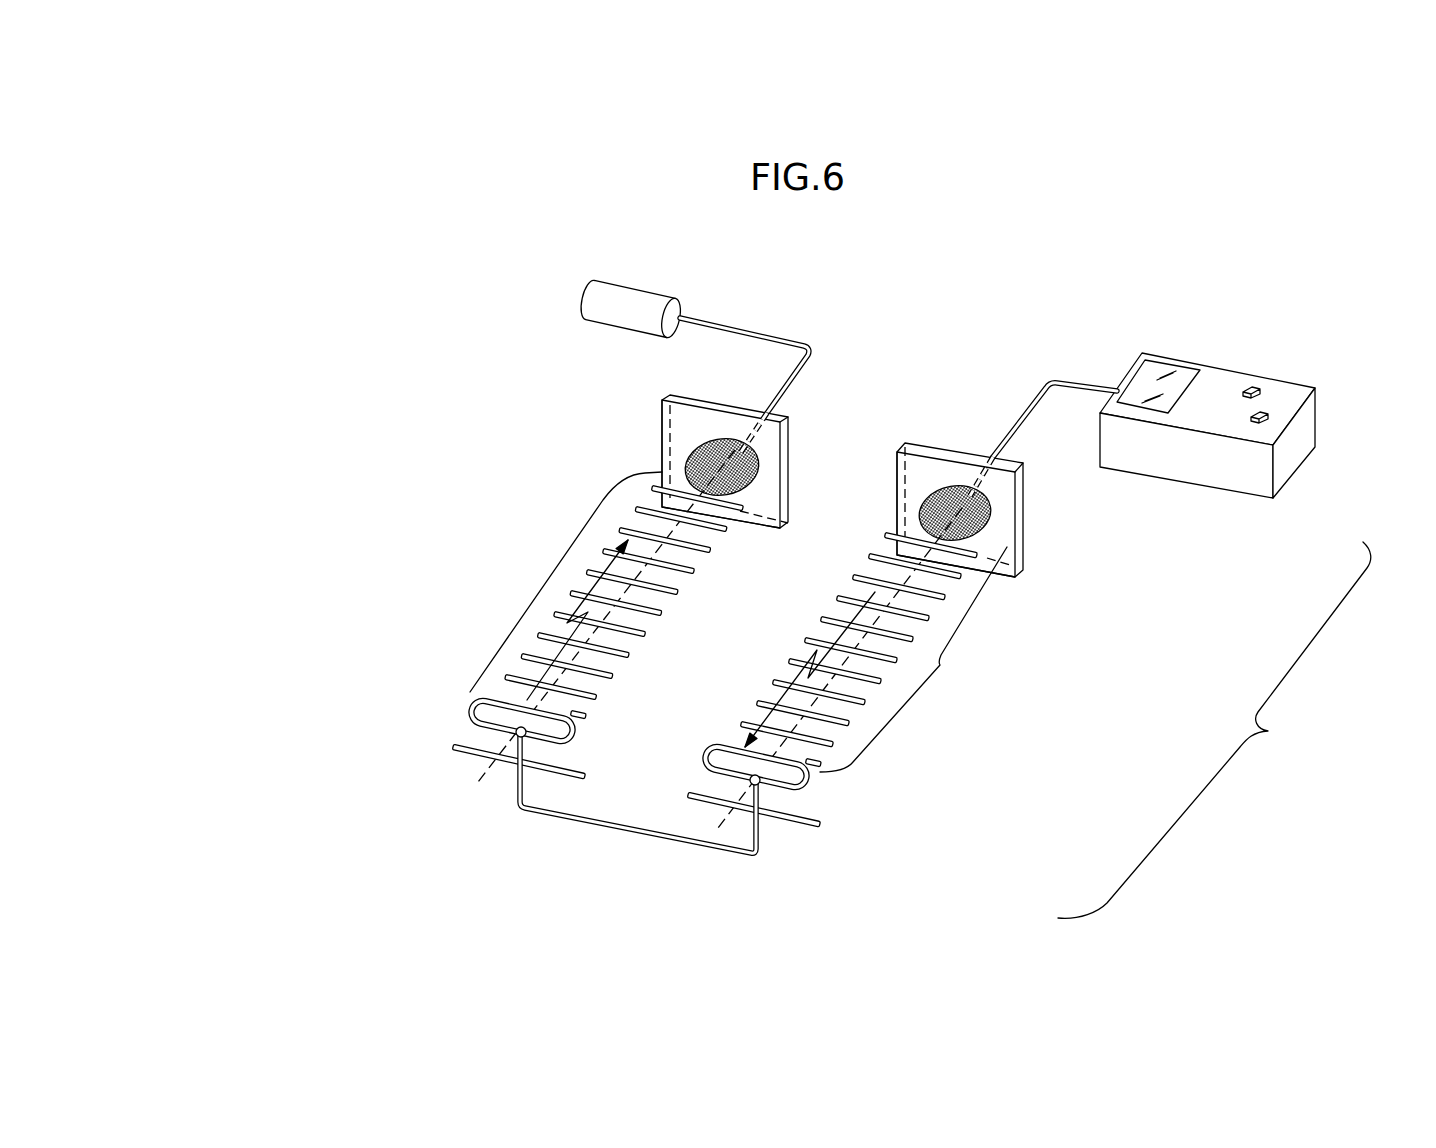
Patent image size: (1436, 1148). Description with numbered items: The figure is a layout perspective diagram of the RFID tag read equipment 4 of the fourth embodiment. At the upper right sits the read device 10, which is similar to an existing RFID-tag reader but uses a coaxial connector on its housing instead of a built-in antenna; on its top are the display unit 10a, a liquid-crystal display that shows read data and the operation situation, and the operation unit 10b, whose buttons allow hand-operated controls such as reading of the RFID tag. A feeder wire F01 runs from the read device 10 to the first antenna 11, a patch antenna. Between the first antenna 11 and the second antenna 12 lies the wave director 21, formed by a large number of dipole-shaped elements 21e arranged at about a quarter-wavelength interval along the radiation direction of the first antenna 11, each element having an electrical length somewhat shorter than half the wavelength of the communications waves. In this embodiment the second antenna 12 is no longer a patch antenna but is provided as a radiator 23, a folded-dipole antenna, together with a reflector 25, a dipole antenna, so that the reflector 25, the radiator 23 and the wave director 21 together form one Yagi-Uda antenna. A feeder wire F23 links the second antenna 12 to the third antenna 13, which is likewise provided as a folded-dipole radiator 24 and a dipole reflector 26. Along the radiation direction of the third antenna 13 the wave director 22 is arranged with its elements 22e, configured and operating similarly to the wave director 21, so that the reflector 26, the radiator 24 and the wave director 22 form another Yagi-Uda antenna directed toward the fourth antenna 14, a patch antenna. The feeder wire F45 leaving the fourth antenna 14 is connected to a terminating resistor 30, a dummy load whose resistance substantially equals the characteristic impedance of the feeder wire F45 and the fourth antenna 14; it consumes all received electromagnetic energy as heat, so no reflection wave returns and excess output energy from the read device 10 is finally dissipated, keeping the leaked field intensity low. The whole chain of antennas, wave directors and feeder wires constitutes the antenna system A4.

The RFID tag read equipment 4 is at (1245, 357).
The read device 10 is at (1245, 393).
The display unit 10a is at (1154, 372).
The operation unit 10b is at (1252, 390).
The feeder wire F01 is at (1075, 385).
The first antenna 11 is at (1003, 507).
The second antenna 12 is at (906, 633).
The third antenna 13 is at (572, 574).
The fourth antenna 14 is at (681, 435).
The wave director 21 is at (897, 613).
The elements 21e is at (870, 557).
The wave director 22 is at (700, 574).
The elements 22e is at (690, 593).
The radiator 23 is at (815, 790).
The radiator 24 is at (442, 719).
The reflector 25 is at (780, 828).
The reflector 26 is at (472, 760).
The terminating resistor 30 is at (603, 288).
The feeder wire F23 is at (660, 836).
The feeder wire F45 is at (745, 335).
The antenna system A4 is at (1214, 730).